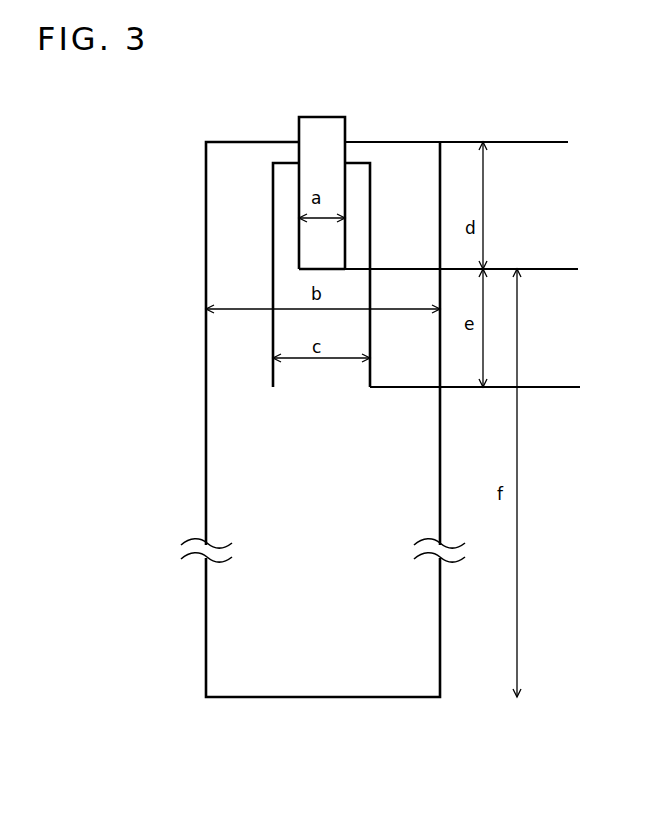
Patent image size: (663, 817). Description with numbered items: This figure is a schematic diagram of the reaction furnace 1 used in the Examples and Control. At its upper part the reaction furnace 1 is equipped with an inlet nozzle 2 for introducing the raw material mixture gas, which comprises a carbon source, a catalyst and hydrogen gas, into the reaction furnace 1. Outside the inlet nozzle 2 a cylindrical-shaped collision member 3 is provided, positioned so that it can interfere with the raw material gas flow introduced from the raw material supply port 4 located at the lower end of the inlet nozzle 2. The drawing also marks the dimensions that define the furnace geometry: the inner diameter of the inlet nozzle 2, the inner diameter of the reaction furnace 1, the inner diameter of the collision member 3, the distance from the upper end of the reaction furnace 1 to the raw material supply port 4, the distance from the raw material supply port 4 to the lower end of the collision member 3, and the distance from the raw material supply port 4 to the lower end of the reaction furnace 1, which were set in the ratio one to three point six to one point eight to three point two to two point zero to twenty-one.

The reaction furnace 1 is at (205, 448).
The inlet nozzle 2 is at (298, 124).
The collision member 3 is at (273, 205).
The raw material supply port 4 is at (306, 270).